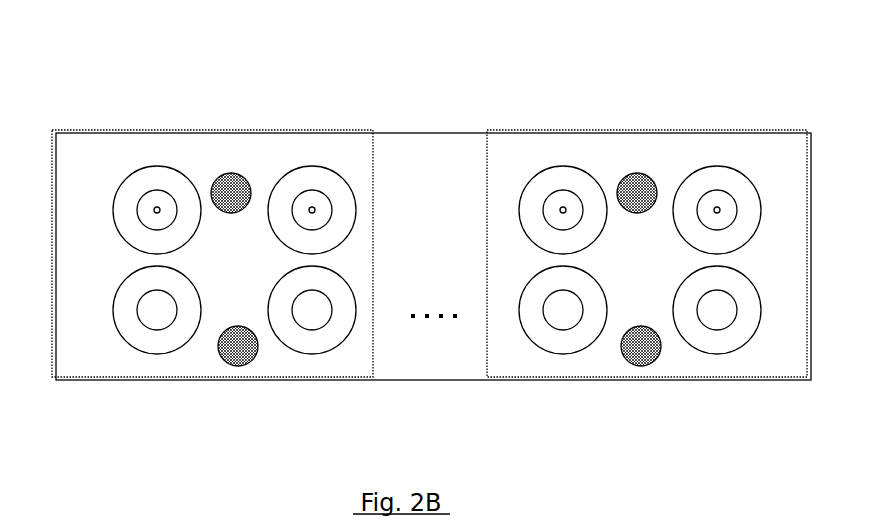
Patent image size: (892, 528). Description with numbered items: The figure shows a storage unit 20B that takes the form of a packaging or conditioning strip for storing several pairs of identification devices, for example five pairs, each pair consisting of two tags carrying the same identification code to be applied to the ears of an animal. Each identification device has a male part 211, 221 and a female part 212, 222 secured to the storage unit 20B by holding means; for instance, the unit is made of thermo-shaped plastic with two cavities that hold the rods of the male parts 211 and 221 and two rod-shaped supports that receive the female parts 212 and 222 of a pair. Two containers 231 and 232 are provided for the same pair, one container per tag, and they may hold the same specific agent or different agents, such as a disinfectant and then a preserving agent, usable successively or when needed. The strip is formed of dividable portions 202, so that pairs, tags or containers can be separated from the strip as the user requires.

The dividable portions 202 is at (373, 342).
The storage unit 20B is at (593, 130).
The male part 211 is at (141, 167).
The female part 212 is at (140, 354).
The male part 221 is at (297, 167).
The female part 222 is at (294, 354).
The container 231 is at (214, 175).
The container 232 is at (226, 364).